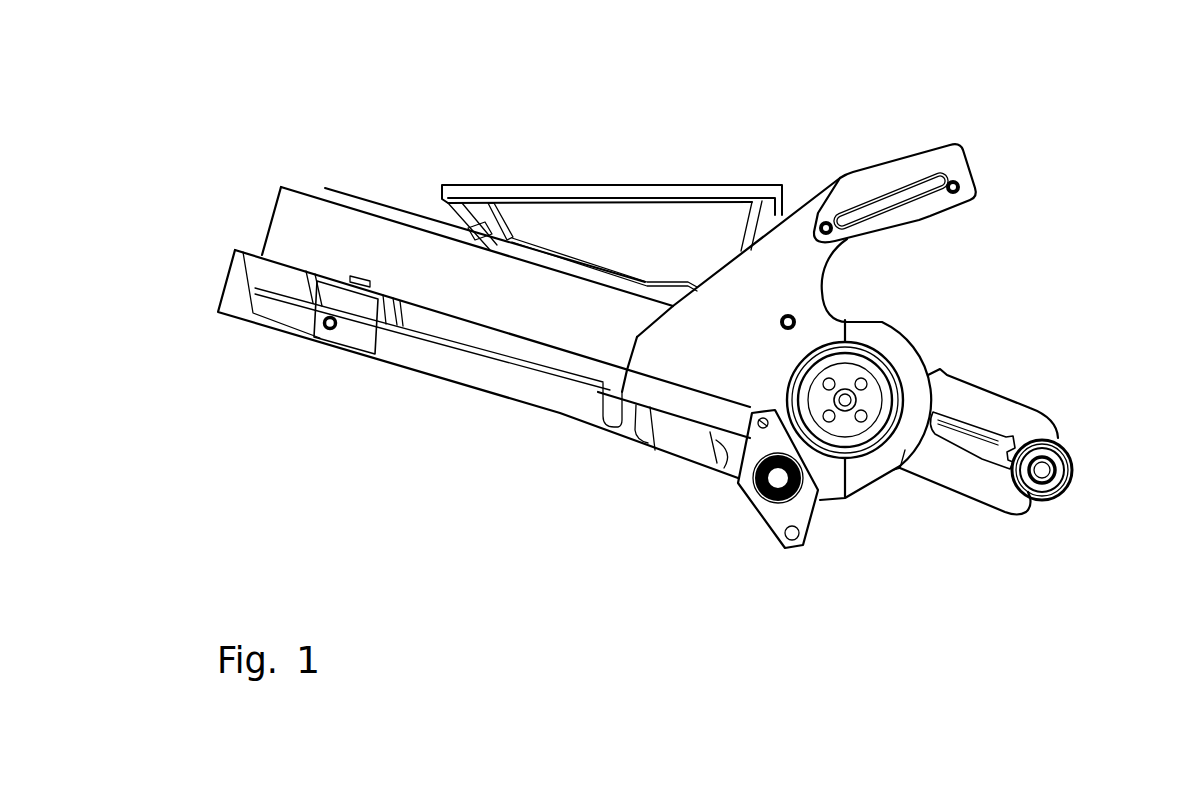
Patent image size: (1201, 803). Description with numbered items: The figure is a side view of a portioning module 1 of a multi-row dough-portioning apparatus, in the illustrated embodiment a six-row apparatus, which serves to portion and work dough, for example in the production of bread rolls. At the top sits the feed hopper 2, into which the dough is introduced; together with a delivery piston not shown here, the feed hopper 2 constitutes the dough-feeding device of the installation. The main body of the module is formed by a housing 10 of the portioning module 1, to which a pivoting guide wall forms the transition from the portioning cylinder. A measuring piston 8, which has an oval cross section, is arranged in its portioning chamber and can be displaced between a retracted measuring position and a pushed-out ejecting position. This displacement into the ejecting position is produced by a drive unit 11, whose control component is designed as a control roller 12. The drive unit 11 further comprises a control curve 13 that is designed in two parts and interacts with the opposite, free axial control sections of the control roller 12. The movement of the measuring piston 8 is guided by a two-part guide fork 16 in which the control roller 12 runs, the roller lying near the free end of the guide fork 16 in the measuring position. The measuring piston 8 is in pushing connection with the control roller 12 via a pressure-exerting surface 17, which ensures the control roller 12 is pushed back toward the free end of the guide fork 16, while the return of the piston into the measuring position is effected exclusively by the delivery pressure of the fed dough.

The portioning module 1 is at (784, 104).
The feed hopper 2 is at (583, 190).
The measuring piston 8 is at (960, 463).
The housing 10 is at (653, 447).
The drive unit 11 is at (1081, 460).
The control roller 12 is at (1078, 468).
The control curve 13 is at (915, 176).
The guide fork 16 is at (1013, 412).
The pressure-exerting surface 17 is at (1010, 477).